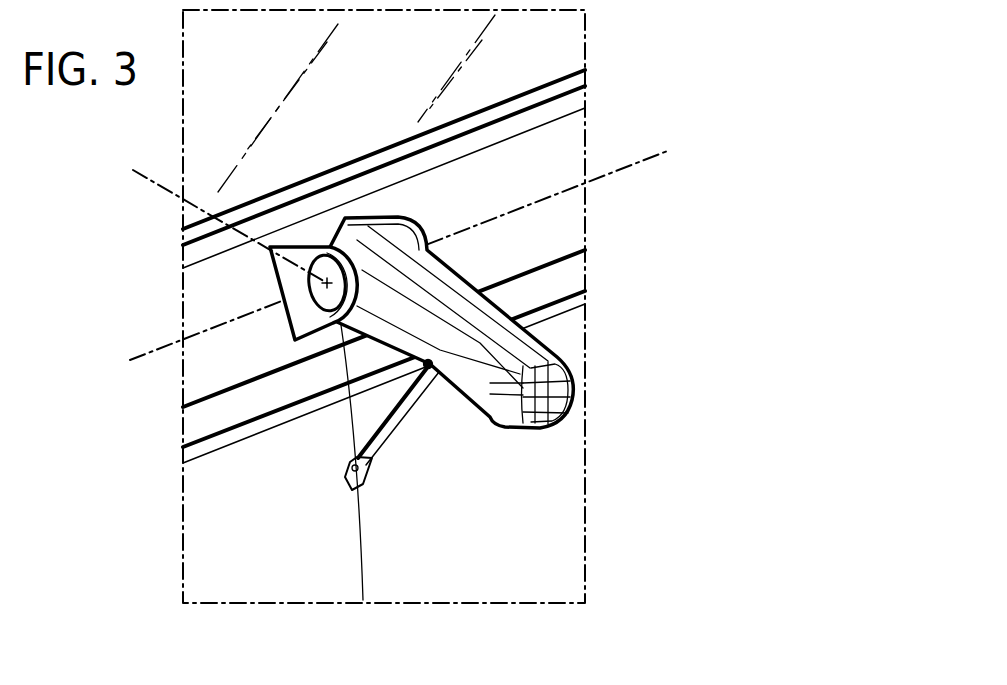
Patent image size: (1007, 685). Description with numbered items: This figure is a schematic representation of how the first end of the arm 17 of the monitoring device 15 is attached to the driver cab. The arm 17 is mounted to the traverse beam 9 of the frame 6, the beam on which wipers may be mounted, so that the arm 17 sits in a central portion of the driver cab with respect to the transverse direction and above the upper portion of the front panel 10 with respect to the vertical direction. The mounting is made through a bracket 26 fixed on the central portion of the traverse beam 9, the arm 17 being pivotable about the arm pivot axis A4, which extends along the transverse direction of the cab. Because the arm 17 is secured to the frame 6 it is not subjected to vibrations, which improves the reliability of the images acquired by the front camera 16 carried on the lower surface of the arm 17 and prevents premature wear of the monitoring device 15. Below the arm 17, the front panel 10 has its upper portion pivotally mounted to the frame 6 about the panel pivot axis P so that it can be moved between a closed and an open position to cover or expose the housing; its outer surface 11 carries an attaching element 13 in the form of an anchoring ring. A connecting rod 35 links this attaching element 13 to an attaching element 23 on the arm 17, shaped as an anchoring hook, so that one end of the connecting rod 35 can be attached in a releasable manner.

The traverse beam 9 is at (557, 110).
The frame 6 is at (520, 172).
The panel pivot axis P is at (653, 160).
The arm pivot axis A4 is at (214, 221).
The bracket 26 is at (287, 278).
The arm 17 is at (553, 334).
The front camera 16 is at (510, 428).
The monitoring device 15 is at (598, 405).
The outer surface 11 is at (548, 455).
The front panel 10 is at (487, 512).
The attaching element 13 is at (362, 483).
The connecting rod 35 is at (402, 407).
The attaching element 23 is at (438, 380).